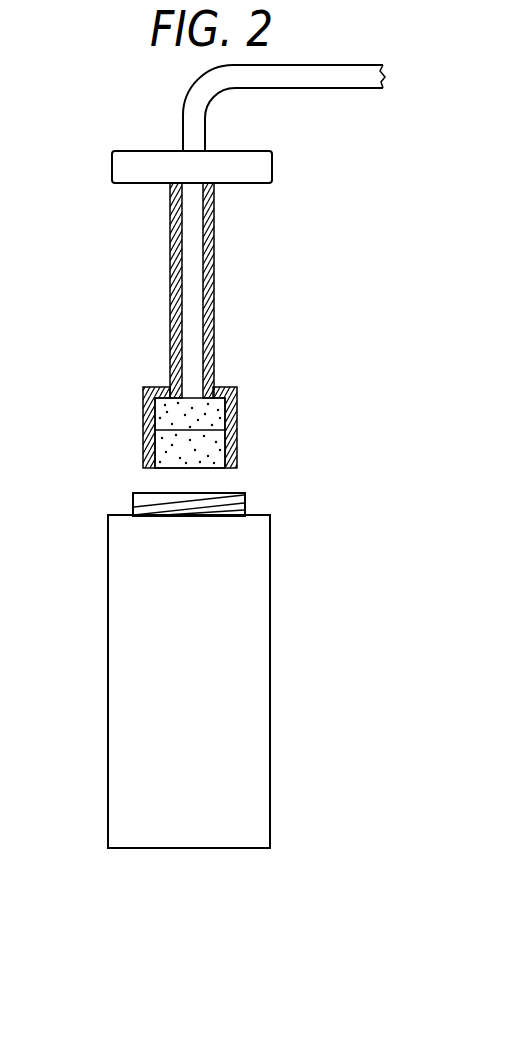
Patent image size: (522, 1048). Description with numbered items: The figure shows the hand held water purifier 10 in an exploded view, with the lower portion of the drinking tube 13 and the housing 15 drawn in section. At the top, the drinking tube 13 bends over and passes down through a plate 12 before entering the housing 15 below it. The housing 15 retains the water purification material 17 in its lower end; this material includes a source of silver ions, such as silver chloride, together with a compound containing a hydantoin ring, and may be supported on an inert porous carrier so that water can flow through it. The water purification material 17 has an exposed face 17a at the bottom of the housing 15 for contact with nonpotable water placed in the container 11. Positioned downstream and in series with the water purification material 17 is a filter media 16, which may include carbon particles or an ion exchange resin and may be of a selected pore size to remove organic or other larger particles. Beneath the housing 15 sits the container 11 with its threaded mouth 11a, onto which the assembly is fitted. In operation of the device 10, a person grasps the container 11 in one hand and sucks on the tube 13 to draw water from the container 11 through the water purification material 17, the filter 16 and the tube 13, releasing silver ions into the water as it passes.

The hand held water purifier 10 is at (171, 650).
The container 11 is at (243, 657).
The threaded cap / mouth 11a is at (228, 492).
The mounting plate 12 is at (255, 173).
The drinking tube 13 is at (323, 72).
The housing 15 is at (233, 408).
The filter media 16 is at (160, 412).
The water purification material 17 is at (212, 445).
The exposed face 17a is at (180, 467).